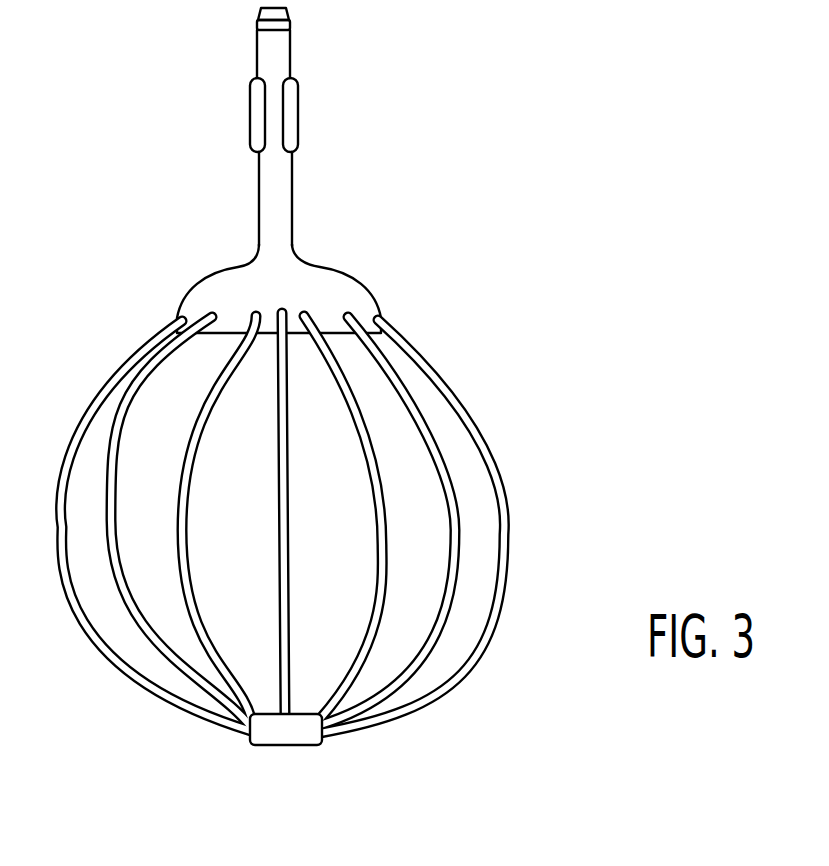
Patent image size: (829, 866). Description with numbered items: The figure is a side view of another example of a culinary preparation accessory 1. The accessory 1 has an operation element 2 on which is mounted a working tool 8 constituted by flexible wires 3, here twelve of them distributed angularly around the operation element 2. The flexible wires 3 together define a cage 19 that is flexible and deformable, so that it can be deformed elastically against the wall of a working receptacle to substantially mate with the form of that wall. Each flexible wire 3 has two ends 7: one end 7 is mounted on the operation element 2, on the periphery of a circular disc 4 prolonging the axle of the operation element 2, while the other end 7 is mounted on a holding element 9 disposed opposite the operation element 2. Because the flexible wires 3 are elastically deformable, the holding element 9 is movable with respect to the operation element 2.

The accessory 1 is at (160, 175).
The operation element 2 is at (280, 190).
The flexible wire 3 is at (453, 552).
The circular disc 4 is at (333, 287).
The ends 7 is at (178, 320).
The working tool 8 is at (323, 538).
The holding element 9 is at (285, 734).
The cage 19 is at (313, 548).